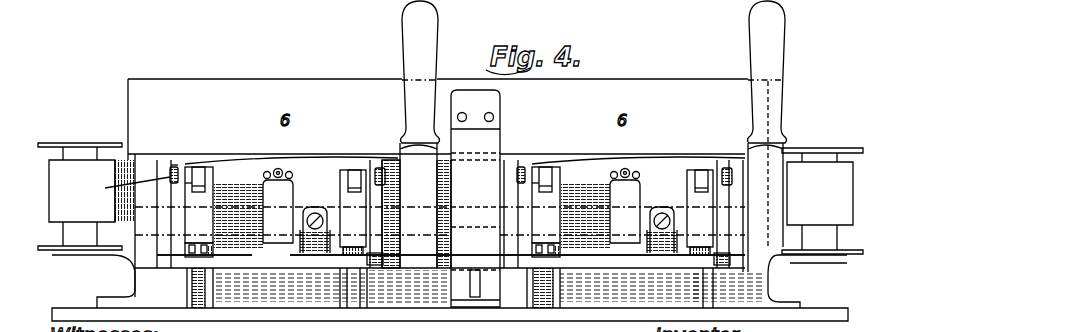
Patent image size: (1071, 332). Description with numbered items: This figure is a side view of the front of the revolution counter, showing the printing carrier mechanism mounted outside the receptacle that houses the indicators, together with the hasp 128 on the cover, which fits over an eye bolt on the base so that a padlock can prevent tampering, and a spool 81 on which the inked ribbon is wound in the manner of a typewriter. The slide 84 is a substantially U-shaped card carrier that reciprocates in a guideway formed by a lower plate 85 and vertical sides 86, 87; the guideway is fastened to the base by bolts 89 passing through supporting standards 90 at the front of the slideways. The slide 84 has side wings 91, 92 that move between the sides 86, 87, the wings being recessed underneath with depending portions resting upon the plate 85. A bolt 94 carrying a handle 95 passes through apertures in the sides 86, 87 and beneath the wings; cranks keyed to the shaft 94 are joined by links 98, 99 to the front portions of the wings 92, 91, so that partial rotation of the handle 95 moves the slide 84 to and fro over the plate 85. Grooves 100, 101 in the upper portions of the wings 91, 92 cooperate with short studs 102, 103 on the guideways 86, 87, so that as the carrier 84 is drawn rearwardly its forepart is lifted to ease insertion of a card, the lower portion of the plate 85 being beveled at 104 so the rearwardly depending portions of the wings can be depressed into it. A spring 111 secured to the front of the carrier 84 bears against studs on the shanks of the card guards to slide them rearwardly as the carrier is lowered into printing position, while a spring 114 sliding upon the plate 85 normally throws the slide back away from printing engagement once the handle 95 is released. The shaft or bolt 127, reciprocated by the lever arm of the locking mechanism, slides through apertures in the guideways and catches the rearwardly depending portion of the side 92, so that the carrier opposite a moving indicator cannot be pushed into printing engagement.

The spool 81 is at (86, 196).
The slide 84 is at (297, 158).
The lower plate 85 is at (451, 263).
The vertical side 86 is at (388, 165).
The vertical side 87 is at (163, 166).
The bolts 89 is at (197, 253).
The supporting standards 90 is at (350, 290).
The side wing 91 is at (180, 165).
The side wing 92 is at (368, 160).
The bolt or shaft 94 is at (236, 218).
The handle 95 is at (430, 43).
The link 98 is at (352, 193).
The link 99 is at (201, 166).
The groove 100 is at (174, 165).
The groove 101 is at (374, 165).
The short stud 102 is at (383, 172).
The short stud 103 is at (122, 186).
The beveled portion 104 is at (375, 266).
The spring 111 is at (294, 205).
The spring 114 is at (315, 238).
The shaft or bolt 127 is at (447, 215).
The hasp 128 is at (490, 139).